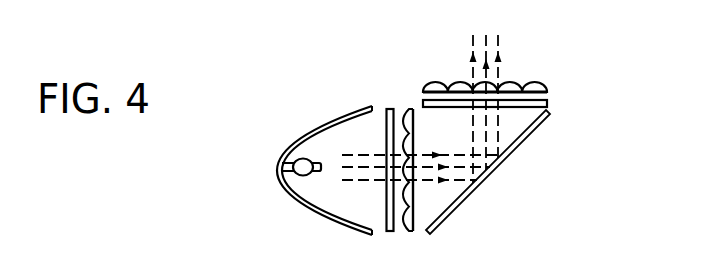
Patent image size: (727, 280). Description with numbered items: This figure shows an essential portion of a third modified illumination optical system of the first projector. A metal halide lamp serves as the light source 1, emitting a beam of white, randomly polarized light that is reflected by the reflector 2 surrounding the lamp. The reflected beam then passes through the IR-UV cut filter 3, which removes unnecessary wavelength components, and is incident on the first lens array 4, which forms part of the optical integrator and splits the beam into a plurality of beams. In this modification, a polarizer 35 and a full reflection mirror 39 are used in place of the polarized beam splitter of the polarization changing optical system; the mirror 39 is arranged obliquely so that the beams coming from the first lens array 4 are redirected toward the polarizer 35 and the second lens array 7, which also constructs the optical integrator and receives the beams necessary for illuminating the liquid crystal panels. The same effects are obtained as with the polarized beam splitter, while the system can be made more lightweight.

The light source 1 is at (300, 160).
The reflector 2 is at (318, 113).
The IR-UV cut filter 3 is at (387, 108).
The first lens array 4 is at (411, 108).
The second lens array 7 is at (533, 83).
The polarizer 35 is at (548, 103).
The full reflection mirror 39 is at (525, 142).